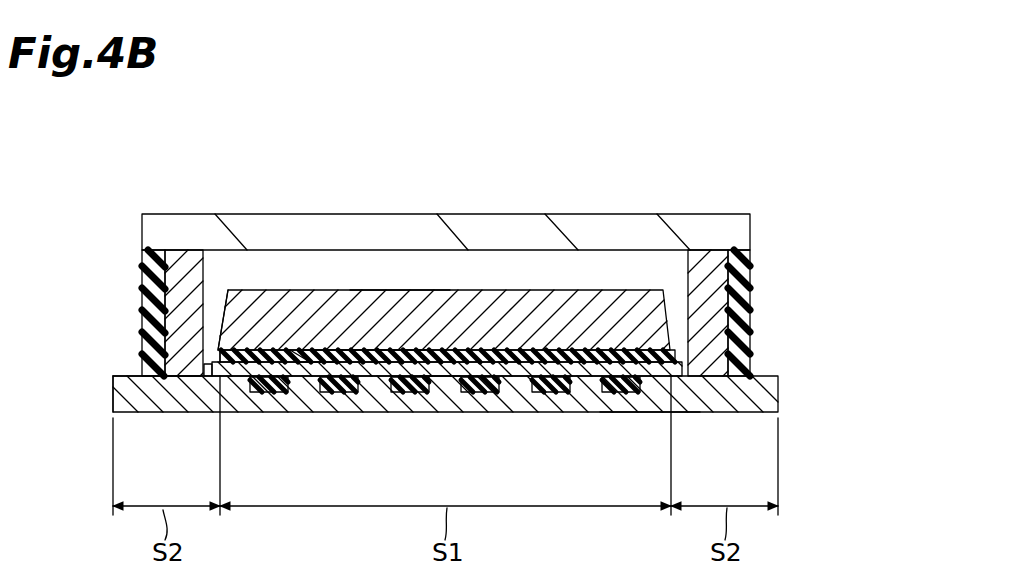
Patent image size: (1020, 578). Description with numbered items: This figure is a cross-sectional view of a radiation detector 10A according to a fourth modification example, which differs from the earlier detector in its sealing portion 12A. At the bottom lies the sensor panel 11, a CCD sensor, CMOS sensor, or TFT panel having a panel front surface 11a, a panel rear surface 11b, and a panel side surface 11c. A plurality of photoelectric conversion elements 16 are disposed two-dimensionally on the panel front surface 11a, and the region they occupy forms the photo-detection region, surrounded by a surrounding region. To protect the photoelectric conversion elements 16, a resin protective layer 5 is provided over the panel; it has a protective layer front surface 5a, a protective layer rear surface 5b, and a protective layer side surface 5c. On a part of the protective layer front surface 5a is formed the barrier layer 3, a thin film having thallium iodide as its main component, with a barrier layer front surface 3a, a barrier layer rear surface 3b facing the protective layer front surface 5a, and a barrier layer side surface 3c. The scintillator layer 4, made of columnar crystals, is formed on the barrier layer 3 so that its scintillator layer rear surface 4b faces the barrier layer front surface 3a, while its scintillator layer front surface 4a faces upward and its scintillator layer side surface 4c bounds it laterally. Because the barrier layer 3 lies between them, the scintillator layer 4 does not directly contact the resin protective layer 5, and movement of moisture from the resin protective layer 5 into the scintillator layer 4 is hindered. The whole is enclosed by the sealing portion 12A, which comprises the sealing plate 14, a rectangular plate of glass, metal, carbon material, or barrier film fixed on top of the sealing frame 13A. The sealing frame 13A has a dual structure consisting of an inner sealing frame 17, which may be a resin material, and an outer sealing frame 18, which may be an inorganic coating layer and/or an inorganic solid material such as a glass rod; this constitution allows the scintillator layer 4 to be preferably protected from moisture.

The radiation detector 10A is at (400, 122).
The sealing portion 12A is at (855, 162).
The sealing plate 14 is at (755, 219).
The sealing frame 13A is at (755, 257).
The outer sealing frame 18 is at (145, 263).
The inner sealing frame 17 is at (166, 322).
The scintillator layer 4 is at (673, 304).
The scintillator layer front surface 4a is at (366, 350).
The scintillator layer rear surface 4b is at (403, 290).
The scintillator layer side surface 4c is at (219, 348).
The barrier layer 3 is at (677, 356).
The barrier layer front surface 3a is at (316, 368).
The barrier layer rear surface 3b is at (300, 358).
The barrier layer side surface 3c is at (217, 356).
The resin protective layer 5 is at (684, 370).
The protective layer front surface 5a is at (500, 380).
The protective layer rear surface 5b is at (438, 366).
The protective layer side surface 5c is at (207, 372).
The photoelectric conversion element 16 is at (560, 385).
The sensor panel 11 is at (783, 396).
The panel front surface 11a is at (128, 376).
The panel rear surface 11b is at (657, 412).
The panel side surface 11c is at (113, 403).